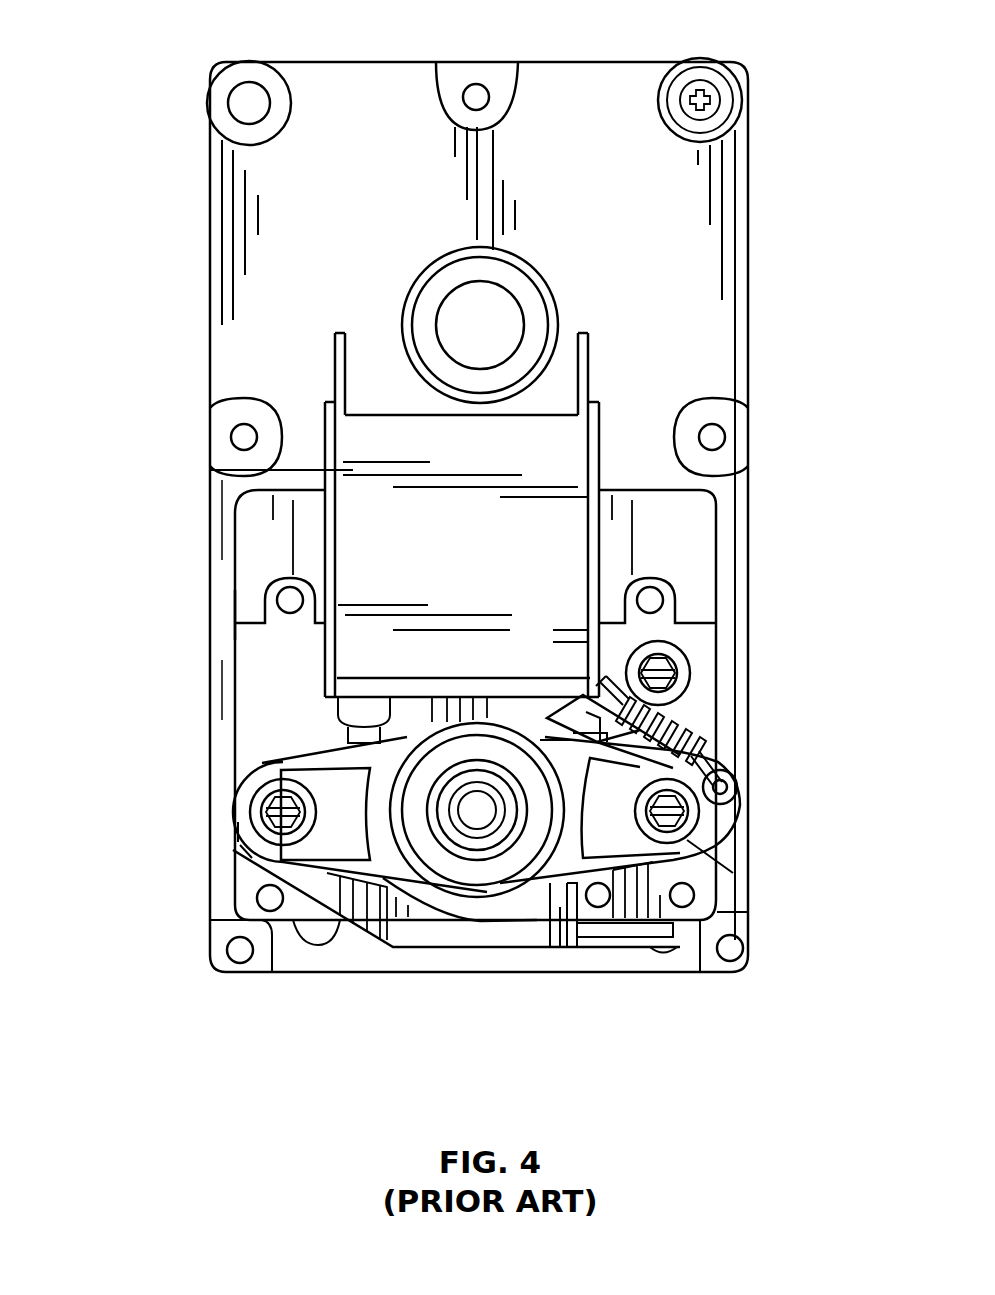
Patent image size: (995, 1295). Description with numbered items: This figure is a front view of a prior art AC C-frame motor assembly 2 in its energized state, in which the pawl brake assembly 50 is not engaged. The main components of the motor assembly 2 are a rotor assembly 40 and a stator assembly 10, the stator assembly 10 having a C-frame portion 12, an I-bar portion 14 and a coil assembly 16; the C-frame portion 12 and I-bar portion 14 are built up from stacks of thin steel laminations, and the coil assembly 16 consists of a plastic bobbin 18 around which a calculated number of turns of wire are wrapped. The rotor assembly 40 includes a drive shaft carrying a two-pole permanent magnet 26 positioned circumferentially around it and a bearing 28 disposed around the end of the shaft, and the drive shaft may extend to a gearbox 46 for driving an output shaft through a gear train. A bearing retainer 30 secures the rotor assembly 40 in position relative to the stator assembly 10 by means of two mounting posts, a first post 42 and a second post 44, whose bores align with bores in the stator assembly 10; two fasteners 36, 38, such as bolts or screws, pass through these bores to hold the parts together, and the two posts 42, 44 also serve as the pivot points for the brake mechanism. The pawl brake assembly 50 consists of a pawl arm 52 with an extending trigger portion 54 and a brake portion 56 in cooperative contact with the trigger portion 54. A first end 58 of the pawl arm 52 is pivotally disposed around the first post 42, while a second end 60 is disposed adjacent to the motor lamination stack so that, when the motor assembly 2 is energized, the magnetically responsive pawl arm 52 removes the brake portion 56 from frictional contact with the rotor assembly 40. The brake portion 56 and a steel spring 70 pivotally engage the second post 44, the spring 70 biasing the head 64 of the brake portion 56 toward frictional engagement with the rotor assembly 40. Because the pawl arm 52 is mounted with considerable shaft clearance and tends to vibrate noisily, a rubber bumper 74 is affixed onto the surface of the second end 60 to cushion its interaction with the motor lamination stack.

The AC C-frame motor assembly 2 is at (362, 62).
The gearbox 46 is at (253, 226).
The bobbin 18 is at (226, 432).
The coil assembly 16 is at (236, 497).
The I-bar portion 14 is at (257, 540).
The stator assembly 10 is at (232, 607).
The C-frame portion 12 is at (252, 692).
The rotor assembly 40 is at (395, 737).
The two-pole permanent magnet 26 is at (462, 823).
The bearing retainer 30 is at (420, 782).
The fastener 36 is at (257, 810).
The first end 58 is at (255, 837).
The first post 42 is at (253, 833).
The bearing 28 is at (212, 905).
The fastener 38 is at (690, 832).
The second post 44 is at (683, 820).
The brake portion 56 is at (730, 810).
The spring 70 is at (697, 723).
The head 64 is at (543, 725).
The pawl brake assembly 50 is at (590, 707).
The pawl arm 52 is at (337, 917).
The extending trigger portion 54 is at (575, 947).
The second end 60 is at (695, 944).
The rubber bumper 74 is at (660, 952).